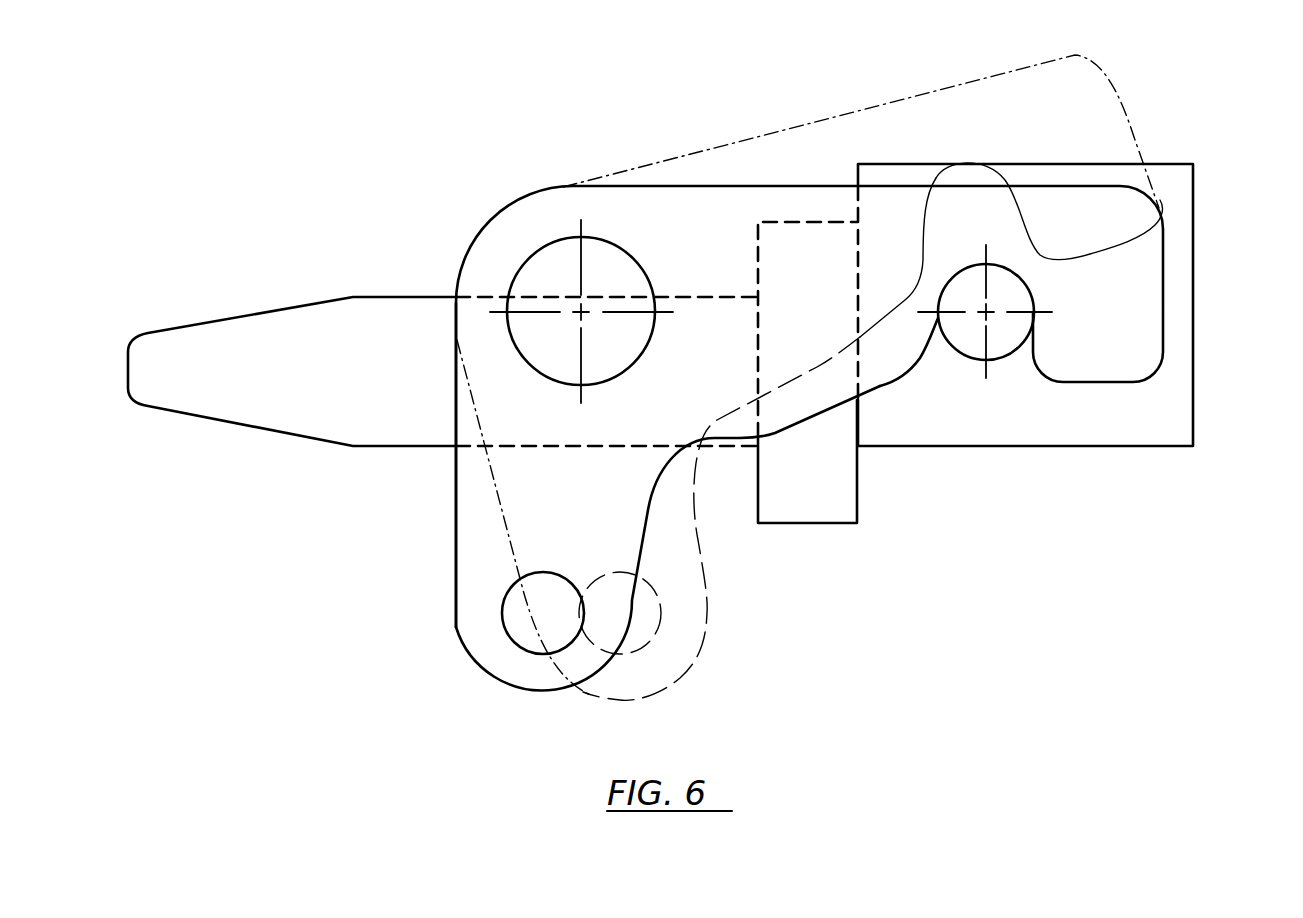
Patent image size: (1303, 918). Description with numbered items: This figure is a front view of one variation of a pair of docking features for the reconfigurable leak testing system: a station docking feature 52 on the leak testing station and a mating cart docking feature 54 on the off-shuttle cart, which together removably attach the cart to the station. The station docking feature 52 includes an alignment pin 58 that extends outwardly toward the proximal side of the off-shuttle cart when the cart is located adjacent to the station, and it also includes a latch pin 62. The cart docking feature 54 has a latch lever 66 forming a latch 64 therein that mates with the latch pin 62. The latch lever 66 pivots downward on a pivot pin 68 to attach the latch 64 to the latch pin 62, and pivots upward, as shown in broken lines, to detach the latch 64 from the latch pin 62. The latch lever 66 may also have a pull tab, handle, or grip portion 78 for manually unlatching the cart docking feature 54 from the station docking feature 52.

The station docking feature 52 is at (1200, 100).
The cart docking feature 54 is at (452, 570).
The alignment pin 58 is at (244, 351).
The latch pin 62 is at (999, 335).
The latch 64 is at (927, 348).
The latch lever 66 is at (473, 507).
The pivot pin 68 is at (581, 311).
The grip portion 78 is at (515, 622).